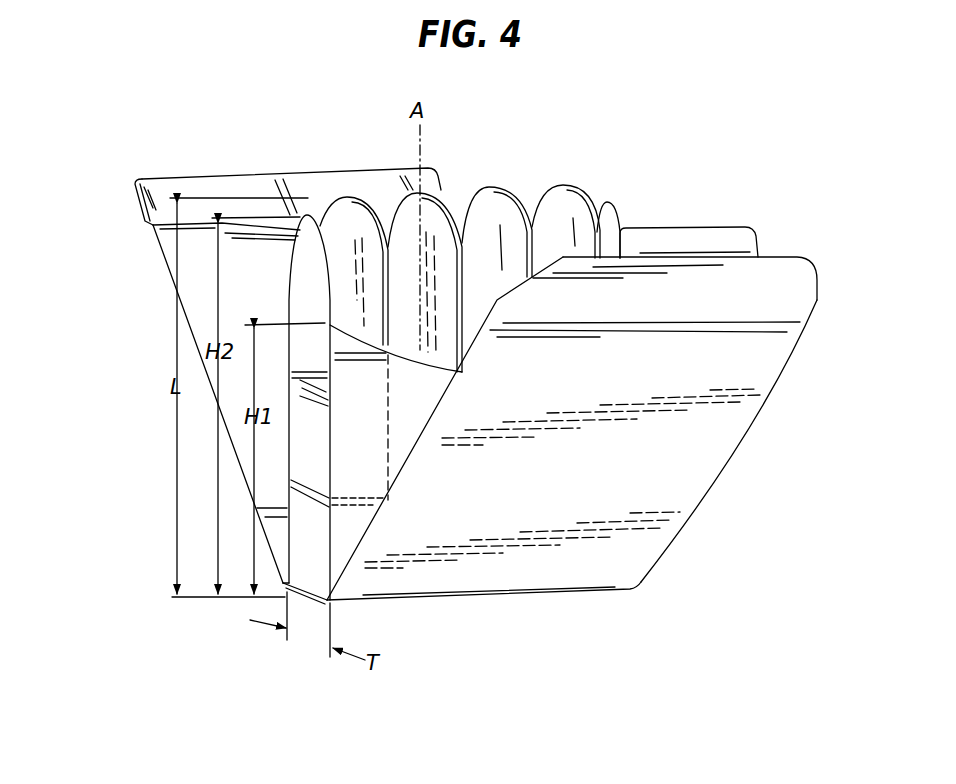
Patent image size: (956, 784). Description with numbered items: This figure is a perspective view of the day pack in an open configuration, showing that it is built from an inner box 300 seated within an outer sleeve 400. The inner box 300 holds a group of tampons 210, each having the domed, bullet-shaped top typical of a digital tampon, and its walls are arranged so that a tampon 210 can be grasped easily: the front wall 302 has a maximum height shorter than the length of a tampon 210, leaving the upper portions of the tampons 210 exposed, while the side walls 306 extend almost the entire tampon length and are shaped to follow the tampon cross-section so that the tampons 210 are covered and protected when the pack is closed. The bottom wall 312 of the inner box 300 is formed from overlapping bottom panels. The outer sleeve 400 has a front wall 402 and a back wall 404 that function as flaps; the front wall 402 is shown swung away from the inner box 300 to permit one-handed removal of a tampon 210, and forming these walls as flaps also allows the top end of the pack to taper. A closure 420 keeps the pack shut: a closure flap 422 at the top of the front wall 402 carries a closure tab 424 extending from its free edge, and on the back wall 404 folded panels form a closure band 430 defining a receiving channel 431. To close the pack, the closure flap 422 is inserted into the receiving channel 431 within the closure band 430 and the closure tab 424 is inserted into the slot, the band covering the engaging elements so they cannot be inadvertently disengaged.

The outer sleeve 400 is at (715, 542).
The front wall 402 is at (658, 447).
The back wall 404 is at (280, 299).
The closure 420 is at (133, 212).
The closure flap 422 is at (717, 290).
The closure tab 424 is at (690, 240).
The closure band 430 is at (235, 172).
The receiving channel 431 is at (167, 233).
The tampon 210 is at (497, 212).
The inner box 300 is at (303, 557).
The front wall 302 is at (440, 401).
The side wall 306 is at (305, 420).
The bottom wall 312 is at (308, 600).